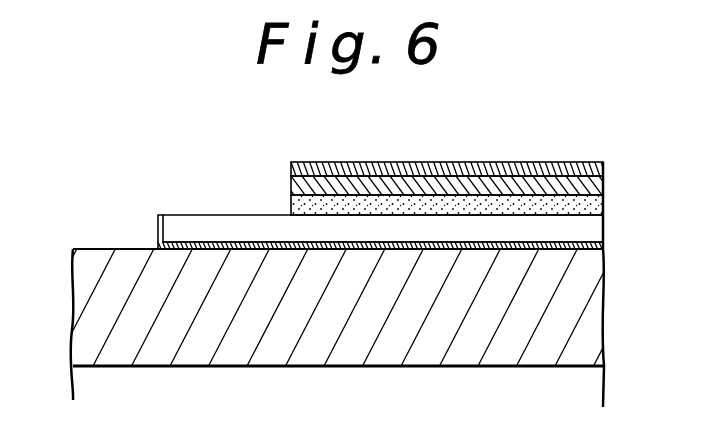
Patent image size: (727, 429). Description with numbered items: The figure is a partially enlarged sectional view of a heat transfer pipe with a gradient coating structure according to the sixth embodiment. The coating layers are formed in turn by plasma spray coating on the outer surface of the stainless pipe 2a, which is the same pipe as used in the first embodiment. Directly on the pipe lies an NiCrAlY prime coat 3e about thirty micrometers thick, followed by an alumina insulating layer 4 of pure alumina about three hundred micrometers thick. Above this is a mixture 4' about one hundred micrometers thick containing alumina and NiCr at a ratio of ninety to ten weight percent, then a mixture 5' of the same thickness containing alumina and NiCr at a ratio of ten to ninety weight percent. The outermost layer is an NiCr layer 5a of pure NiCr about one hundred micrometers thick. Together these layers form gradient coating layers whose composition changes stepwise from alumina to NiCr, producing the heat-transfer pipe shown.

The stainless pipe 2a is at (113, 273).
The NiCrAlY prime coat 3e is at (170, 236).
The alumina insulating layer 4 is at (383, 202).
The mixture containing alumina and NiCr 4' is at (425, 171).
The mixture containing alumina and NiCr 5' is at (446, 147).
The NiCr layer 5a is at (350, 165).